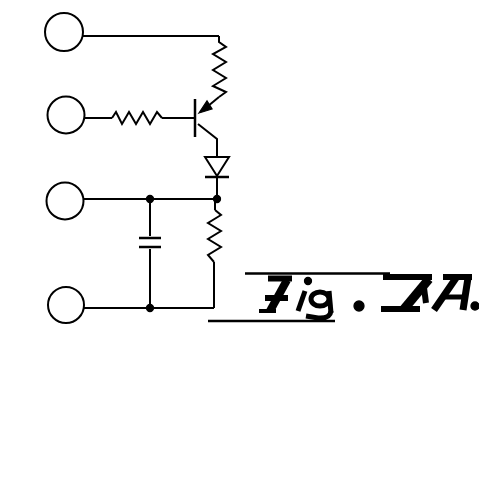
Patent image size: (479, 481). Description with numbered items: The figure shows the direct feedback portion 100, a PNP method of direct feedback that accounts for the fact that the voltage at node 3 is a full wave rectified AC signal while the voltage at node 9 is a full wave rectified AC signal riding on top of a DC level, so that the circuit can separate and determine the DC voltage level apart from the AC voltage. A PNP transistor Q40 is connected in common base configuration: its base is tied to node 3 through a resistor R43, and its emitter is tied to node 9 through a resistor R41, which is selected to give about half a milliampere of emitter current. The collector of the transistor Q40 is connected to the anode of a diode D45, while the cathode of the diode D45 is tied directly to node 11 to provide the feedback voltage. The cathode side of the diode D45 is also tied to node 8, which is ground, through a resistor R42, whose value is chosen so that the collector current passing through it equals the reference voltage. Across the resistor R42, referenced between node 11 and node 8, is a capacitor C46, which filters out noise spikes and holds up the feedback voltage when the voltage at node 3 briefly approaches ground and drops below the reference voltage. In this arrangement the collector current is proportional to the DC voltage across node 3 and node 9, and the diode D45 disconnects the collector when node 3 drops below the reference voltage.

The direct feedback portion 100 is at (226, 174).
The node 9 is at (64, 32).
The node 3 is at (66, 115).
The node 11 is at (61, 211).
The node 8 is at (66, 305).
The resistor R41 is at (249, 66).
The resistor R43 is at (139, 101).
The PNP transistor Q40 is at (243, 117).
The diode D45 is at (250, 165).
The resistor R42 is at (249, 236).
The capacitor C46 is at (126, 253).